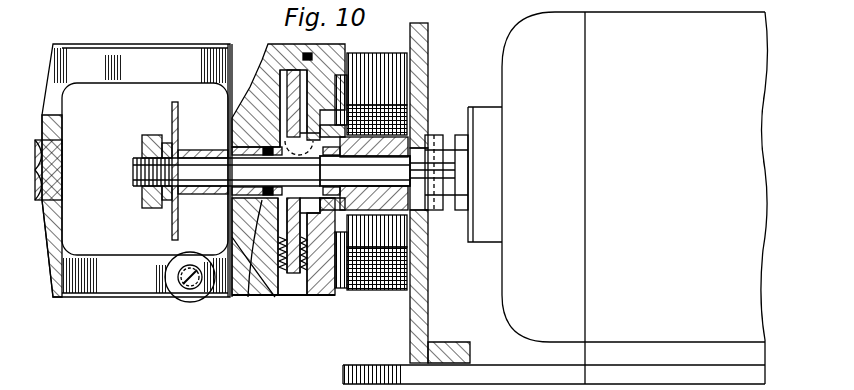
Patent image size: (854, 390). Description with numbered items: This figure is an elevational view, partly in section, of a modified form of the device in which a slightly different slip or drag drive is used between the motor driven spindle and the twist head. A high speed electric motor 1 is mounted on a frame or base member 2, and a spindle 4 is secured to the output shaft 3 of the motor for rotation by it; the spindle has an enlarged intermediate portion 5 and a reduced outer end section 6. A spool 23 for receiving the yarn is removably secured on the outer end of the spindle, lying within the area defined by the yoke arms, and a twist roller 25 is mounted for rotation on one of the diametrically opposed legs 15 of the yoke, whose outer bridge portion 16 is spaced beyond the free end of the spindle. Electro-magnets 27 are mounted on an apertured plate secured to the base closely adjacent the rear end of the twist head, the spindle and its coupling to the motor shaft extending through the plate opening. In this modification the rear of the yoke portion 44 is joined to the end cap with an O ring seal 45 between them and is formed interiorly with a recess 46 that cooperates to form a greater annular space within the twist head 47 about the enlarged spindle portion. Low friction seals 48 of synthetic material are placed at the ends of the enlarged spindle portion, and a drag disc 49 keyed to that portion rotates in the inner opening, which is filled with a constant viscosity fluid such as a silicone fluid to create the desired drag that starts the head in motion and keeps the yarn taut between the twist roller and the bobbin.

The electric motor 1 is at (502, 288).
The base member 2 is at (492, 366).
The output shaft 3 is at (443, 146).
The spindle 4 is at (400, 214).
The enlarged intermediate portion 5 is at (262, 240).
The reduced outer end section 6 is at (133, 165).
The legs 15 is at (93, 50).
The bridge portion 16 is at (62, 212).
The spool 23 is at (178, 131).
The twist roller 25 is at (180, 300).
The electro-magnets 27 is at (393, 57).
The yoke portion 44 is at (275, 278).
The O ring seal 45 is at (308, 292).
The recess 46 is at (285, 65).
The twist head 47 is at (233, 302).
The low friction seals 48 is at (353, 105).
The drag disc 49 is at (300, 78).